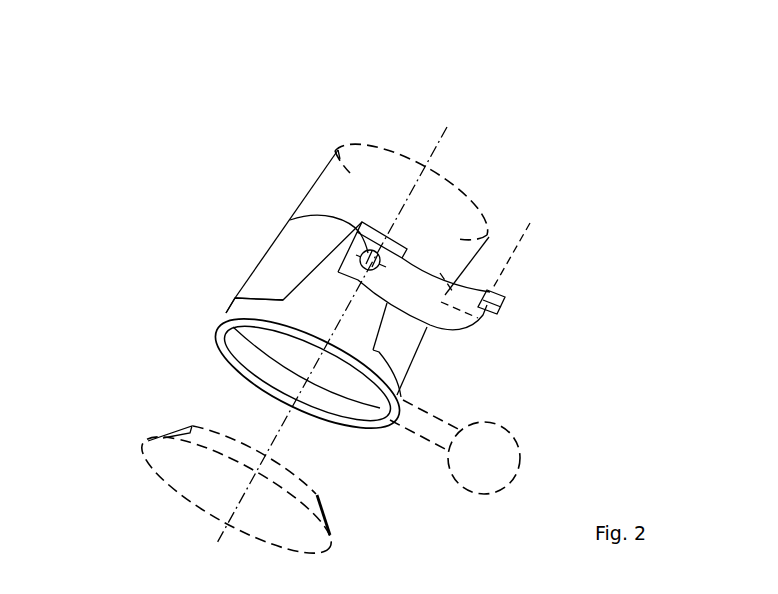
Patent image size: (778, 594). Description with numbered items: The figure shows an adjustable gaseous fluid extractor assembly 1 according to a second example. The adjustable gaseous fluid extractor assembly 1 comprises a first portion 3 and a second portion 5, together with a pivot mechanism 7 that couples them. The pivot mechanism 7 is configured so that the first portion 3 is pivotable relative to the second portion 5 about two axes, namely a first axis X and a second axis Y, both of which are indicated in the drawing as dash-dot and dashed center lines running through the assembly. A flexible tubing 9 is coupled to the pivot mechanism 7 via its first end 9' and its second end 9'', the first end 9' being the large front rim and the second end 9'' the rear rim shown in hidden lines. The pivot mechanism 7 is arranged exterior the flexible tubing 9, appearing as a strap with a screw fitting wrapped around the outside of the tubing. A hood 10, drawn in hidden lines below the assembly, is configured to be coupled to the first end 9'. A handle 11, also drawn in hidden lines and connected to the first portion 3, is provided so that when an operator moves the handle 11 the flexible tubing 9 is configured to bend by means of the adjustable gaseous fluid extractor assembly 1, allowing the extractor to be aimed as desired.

The adjustable gaseous fluid extractor assembly 1 is at (176, 222).
The first portion 3 is at (226, 279).
The second portion 5 is at (558, 308).
The pivot mechanism 7 is at (385, 188).
The flexible tubing 9 is at (249, 215).
The first end 9' is at (180, 291).
The second end 9'' is at (452, 179).
The hood 10 is at (158, 437).
The handle 11 is at (471, 491).
The first axis X is at (294, 222).
The second axis Y is at (517, 318).